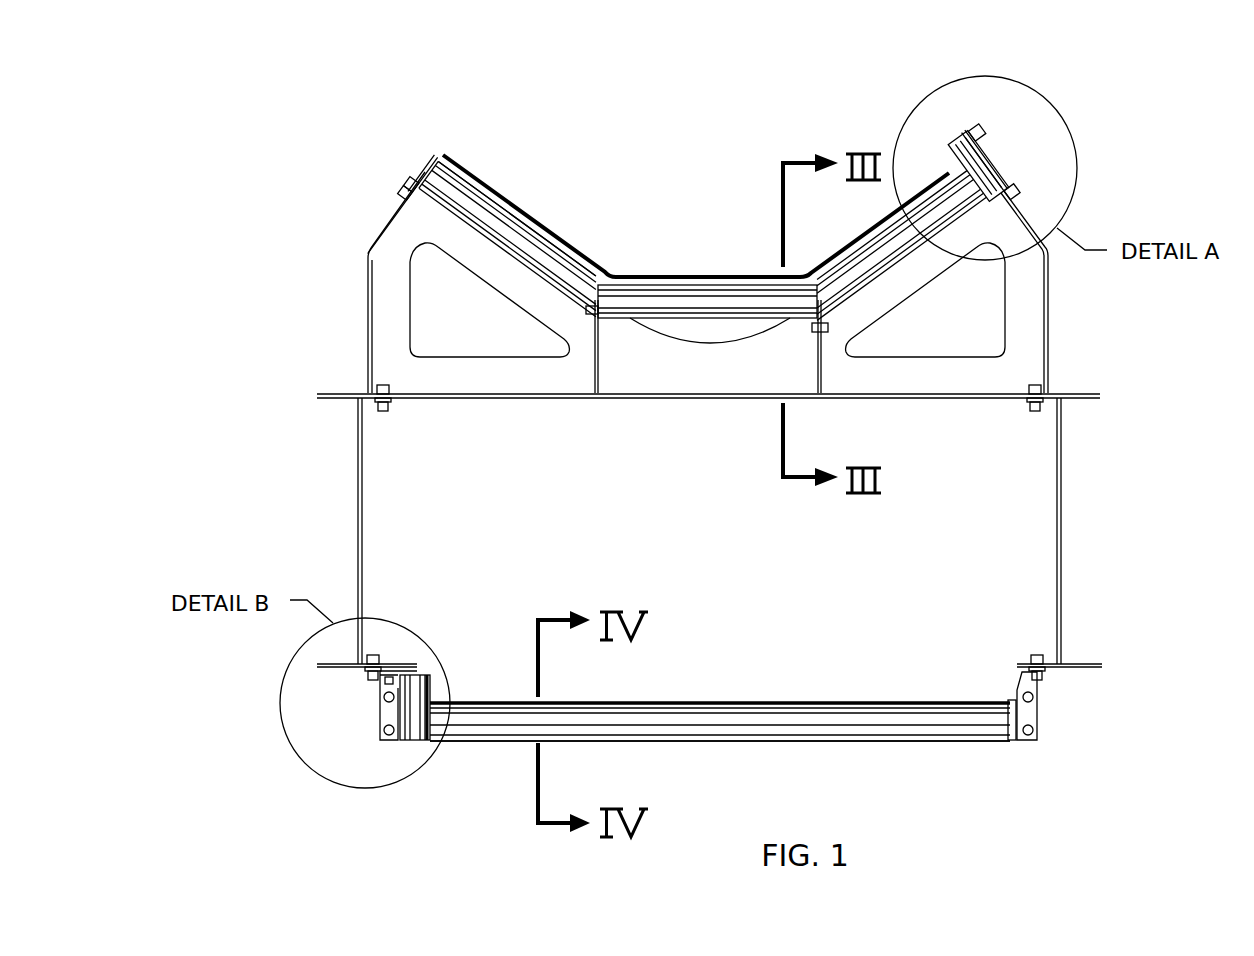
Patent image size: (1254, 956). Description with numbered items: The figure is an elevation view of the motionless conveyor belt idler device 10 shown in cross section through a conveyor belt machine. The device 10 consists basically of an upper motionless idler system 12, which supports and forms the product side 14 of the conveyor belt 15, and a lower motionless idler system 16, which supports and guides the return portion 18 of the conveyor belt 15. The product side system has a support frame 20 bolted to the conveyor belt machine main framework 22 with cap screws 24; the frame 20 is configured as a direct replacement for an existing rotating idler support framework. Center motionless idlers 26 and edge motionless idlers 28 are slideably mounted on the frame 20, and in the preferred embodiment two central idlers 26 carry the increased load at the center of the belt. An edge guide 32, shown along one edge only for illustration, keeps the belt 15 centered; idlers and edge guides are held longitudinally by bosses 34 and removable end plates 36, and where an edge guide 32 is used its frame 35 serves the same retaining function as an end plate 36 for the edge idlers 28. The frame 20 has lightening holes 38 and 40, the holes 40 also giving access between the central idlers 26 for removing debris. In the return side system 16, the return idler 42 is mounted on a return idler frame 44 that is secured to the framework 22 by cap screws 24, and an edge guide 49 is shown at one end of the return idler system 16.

The motionless conveyor belt idler device 10 is at (1143, 388).
The upper motionless conveyor belt idler system 12 is at (1060, 326).
The product side of the conveyor belt 14 is at (475, 173).
The conveyor belt 15 is at (445, 155).
The lower motionless conveyor belt idler system 16 is at (983, 752).
The return portion of the conveyor belt 18 is at (830, 700).
The support frame 20 is at (576, 378).
The conveyor belt machine main framework 22 is at (357, 487).
The cap screws 24 is at (385, 412).
The center motionless idlers 26 is at (717, 300).
The edge motionless idlers 28 is at (495, 223).
The edge guides 32 is at (955, 155).
The bosses 34 is at (588, 310).
The frame of edge guide 35 is at (1000, 168).
The removable end plates 36 is at (420, 182).
The lightening holes 38 is at (430, 331).
The lightening holes 40 is at (725, 330).
The return idler 42 is at (732, 722).
The return idler frame 44 is at (673, 740).
The edge guides 49 is at (430, 687).